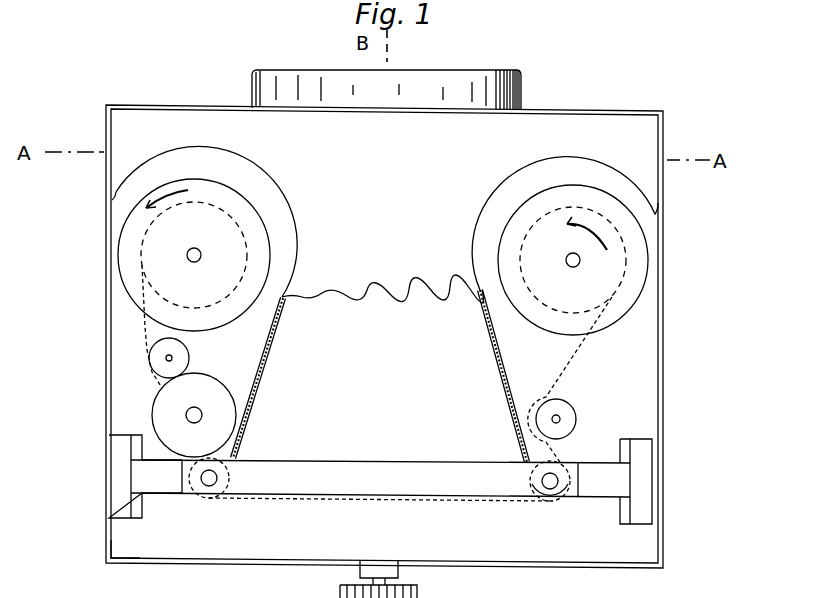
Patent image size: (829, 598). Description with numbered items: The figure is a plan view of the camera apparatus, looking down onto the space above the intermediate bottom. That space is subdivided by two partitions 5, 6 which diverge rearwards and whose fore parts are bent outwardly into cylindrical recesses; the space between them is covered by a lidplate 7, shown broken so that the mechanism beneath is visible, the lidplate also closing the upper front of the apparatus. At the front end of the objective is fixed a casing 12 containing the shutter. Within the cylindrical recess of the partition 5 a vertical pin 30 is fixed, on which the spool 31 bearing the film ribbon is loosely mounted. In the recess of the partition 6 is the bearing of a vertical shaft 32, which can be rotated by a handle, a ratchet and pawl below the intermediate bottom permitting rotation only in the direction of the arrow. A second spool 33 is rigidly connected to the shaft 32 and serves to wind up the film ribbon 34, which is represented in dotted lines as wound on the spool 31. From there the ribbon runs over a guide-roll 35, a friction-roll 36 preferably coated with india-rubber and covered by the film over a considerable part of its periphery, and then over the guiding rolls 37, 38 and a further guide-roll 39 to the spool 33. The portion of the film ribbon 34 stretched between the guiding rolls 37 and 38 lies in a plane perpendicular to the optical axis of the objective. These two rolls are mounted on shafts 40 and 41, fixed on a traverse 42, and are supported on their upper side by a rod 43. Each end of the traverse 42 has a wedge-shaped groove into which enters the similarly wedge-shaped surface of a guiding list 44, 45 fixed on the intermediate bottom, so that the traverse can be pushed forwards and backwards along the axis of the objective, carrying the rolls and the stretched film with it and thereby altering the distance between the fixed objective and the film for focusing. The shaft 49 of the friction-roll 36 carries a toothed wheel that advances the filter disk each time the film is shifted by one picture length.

The partition 5 is at (272, 347).
The partition 6 is at (490, 337).
The lidplate 7 is at (157, 142).
The casing 12 is at (411, 82).
The vertical pin 30 is at (187, 257).
The spool 31 is at (130, 240).
The vertical shaft 32 is at (582, 262).
The second spool 33 is at (635, 234).
The film ribbon 34 is at (145, 323).
The guide-roll 35 is at (160, 350).
The friction-roll 36 is at (172, 395).
The guiding roll 37 is at (207, 480).
The guiding roll 38 is at (552, 498).
The guide-roll 39 is at (568, 419).
The shaft 40 is at (110, 553).
The shaft 41 is at (552, 482).
The traverse 42 is at (152, 475).
The rod 43 is at (338, 466).
The guiding list 44 is at (120, 465).
The guiding list 45 is at (645, 475).
The shaft 49 is at (190, 417).